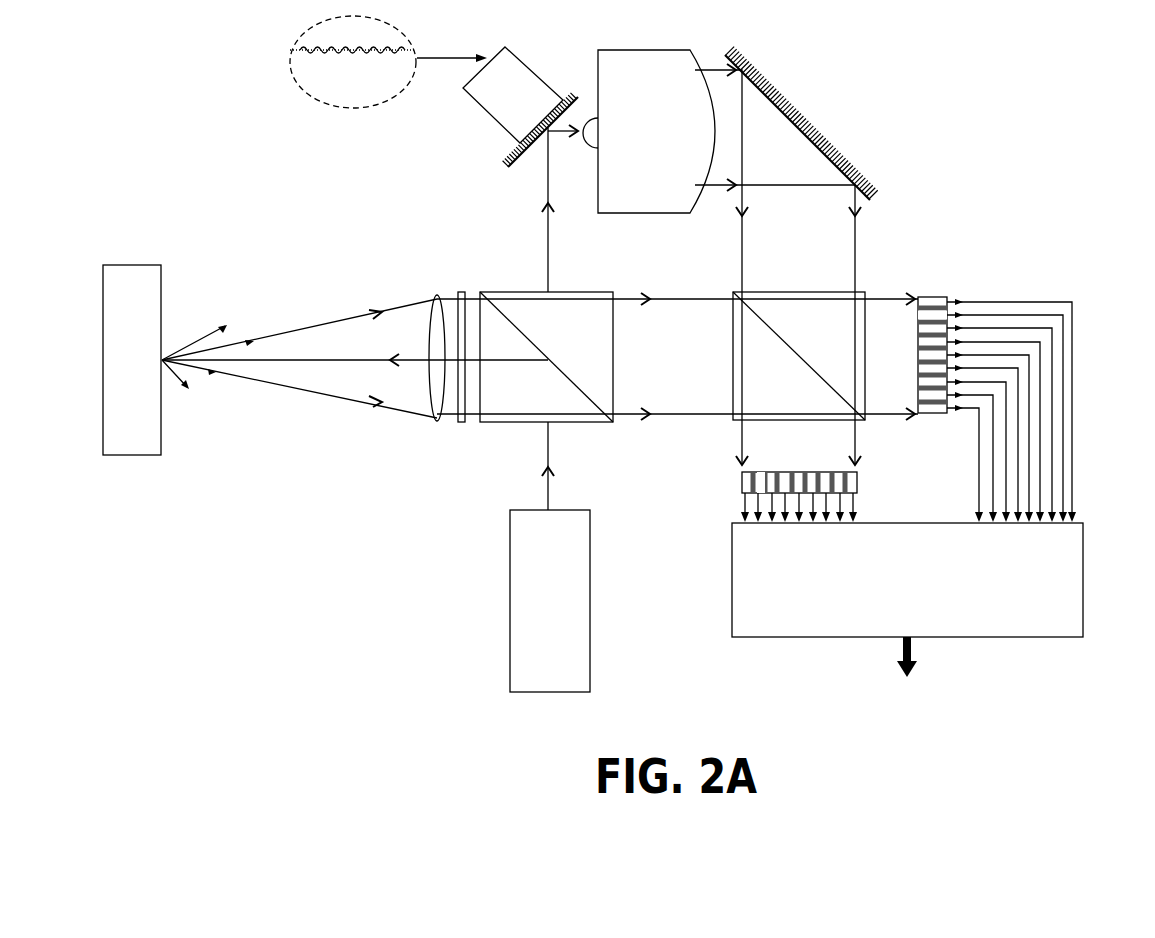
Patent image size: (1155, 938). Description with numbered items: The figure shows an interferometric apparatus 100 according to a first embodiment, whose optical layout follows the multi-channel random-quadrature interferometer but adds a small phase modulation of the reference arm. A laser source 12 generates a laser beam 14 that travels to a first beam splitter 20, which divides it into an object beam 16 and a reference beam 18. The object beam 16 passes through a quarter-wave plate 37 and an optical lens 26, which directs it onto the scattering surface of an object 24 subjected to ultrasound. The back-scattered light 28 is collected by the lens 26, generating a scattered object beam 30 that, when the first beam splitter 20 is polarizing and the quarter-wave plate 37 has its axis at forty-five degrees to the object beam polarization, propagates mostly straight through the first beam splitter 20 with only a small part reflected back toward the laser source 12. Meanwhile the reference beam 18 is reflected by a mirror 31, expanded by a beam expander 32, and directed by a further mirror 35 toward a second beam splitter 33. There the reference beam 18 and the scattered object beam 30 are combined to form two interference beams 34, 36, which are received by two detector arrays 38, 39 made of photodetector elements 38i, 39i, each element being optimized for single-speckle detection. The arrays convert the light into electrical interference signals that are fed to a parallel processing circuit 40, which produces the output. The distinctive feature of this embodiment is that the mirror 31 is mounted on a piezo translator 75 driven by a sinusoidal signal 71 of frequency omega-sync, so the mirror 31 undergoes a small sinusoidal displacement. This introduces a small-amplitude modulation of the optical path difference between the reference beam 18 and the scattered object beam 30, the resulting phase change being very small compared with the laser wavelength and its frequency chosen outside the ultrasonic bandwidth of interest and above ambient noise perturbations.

The interferometric apparatus 100 is at (998, 146).
The laser source 12 is at (530, 578).
The laser beam 14 is at (548, 443).
The object beam 16 is at (383, 358).
The reference beam 18 is at (548, 265).
The first beam splitter 20 is at (530, 398).
The object 24 is at (142, 433).
The optical lens 26 is at (437, 417).
The back-scattered light 28 is at (340, 320).
The scattered object beam 30 is at (707, 298).
The mirror 31 is at (514, 164).
The beam expander 32 is at (655, 50).
The second beam splitter 33 is at (825, 313).
The interference beam 34 is at (883, 300).
The mirror 35 is at (783, 97).
The interference beam 36 is at (855, 458).
The quarter-wave plate 37 is at (462, 415).
The detector array 38 is at (933, 295).
The photodetector element 38i is at (932, 330).
The detector array 39 is at (742, 474).
The photodetector element 39i is at (767, 478).
The parallel processing circuit 40 is at (1060, 585).
The sinusoidal signal 71 is at (290, 72).
The piezo translator 75 is at (488, 118).